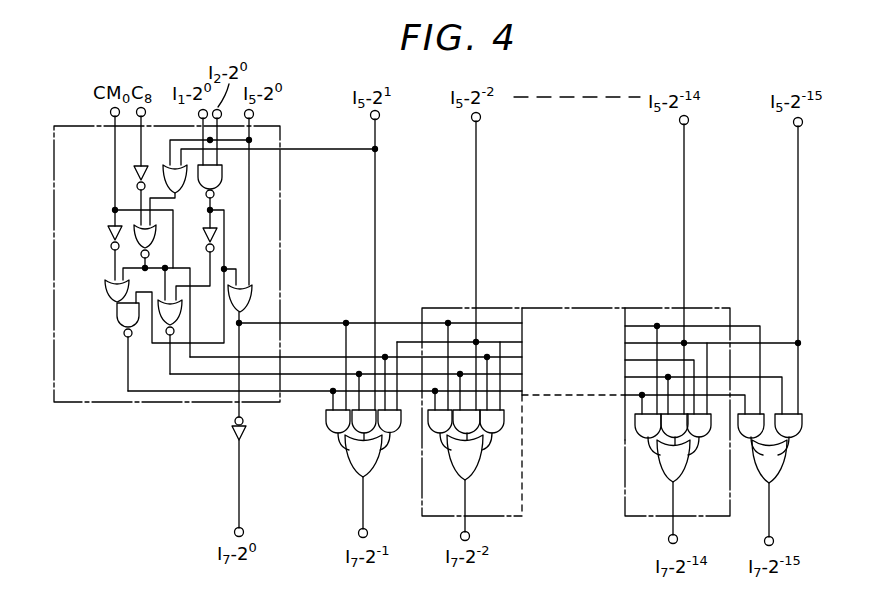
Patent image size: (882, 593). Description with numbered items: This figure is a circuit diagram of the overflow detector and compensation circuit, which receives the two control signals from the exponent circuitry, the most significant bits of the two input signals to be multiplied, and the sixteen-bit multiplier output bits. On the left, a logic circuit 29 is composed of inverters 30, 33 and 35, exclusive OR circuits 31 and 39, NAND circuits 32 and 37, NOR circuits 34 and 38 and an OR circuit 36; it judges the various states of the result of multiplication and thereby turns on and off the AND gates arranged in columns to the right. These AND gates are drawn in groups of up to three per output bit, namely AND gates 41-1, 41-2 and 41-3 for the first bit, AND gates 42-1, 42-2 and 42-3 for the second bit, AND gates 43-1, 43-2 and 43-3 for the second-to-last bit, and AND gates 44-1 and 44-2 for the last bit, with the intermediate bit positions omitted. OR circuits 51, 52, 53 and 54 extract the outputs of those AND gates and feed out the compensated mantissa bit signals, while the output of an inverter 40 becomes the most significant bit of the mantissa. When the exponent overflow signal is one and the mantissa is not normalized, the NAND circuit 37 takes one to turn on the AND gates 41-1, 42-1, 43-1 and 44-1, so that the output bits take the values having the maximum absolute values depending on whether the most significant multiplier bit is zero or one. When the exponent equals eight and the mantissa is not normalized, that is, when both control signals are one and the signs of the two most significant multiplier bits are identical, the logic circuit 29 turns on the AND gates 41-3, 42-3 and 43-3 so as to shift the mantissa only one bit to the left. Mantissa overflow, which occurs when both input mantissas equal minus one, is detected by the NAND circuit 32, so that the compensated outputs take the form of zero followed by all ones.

The logic circuit 29 is at (73, 125).
The inverter 30 is at (134, 173).
The exclusive OR circuit 31 is at (168, 170).
The NAND circuit 32 is at (220, 175).
The inverter 33 is at (108, 232).
The NOR circuit 34 is at (134, 240).
The inverter 35 is at (205, 235).
The OR circuit 36 is at (106, 290).
The NAND circuit 37 is at (117, 316).
The NOR circuit 38 is at (183, 312).
The exclusive OR circuit 39 is at (252, 292).
The inverter 40 is at (234, 432).
The AND gate 41-1 is at (328, 428).
The AND gate 41-2 is at (352, 435).
The AND gate 41-3 is at (398, 434).
The AND gate 42-1 is at (437, 437).
The AND gate 42-2 is at (478, 437).
The AND gate 42-3 is at (505, 427).
The AND gate 43-1 is at (635, 425).
The AND gate 43-2 is at (688, 448).
The AND gate 43-3 is at (720, 450).
The AND gate 44-1 is at (757, 430).
The AND gate 44-2 is at (800, 423).
The OR circuit 51 is at (357, 475).
The OR circuit 52 is at (445, 445).
The OR circuit 53 is at (662, 470).
The OR circuit 54 is at (776, 482).